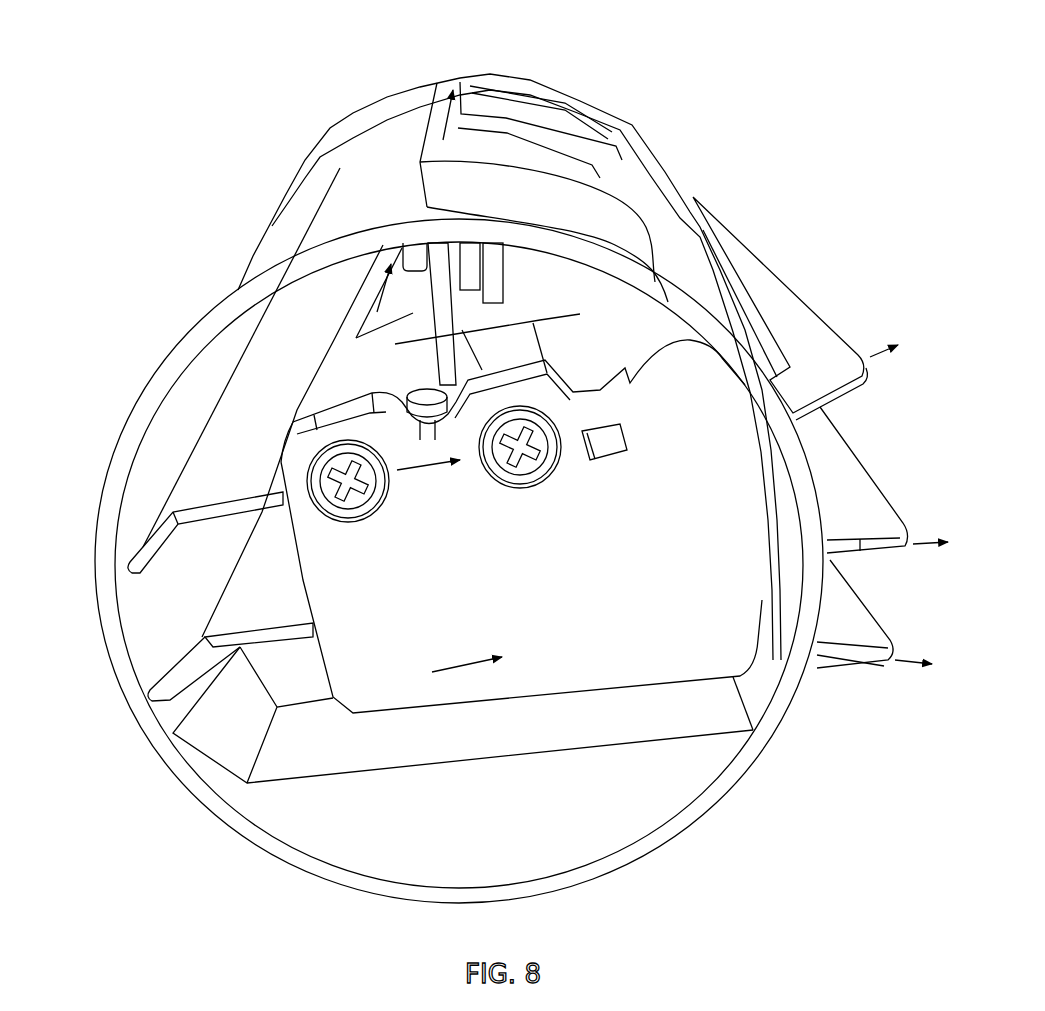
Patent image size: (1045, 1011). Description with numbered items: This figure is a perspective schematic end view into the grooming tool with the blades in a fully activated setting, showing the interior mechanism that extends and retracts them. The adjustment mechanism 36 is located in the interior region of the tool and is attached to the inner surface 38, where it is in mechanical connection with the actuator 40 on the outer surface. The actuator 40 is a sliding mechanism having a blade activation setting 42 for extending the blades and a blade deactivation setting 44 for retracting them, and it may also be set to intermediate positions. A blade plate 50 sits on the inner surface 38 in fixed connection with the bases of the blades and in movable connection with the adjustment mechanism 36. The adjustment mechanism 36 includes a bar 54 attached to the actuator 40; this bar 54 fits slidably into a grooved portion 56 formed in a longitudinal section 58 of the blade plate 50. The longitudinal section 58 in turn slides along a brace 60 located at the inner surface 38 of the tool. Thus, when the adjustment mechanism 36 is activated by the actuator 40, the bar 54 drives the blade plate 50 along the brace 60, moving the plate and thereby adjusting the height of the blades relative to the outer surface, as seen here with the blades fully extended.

The adjustment mechanism 36 is at (312, 312).
The inner surface 38 is at (160, 605).
The actuator 40 is at (684, 178).
The blade activation setting 42 is at (554, 123).
The blade deactivation setting 44 is at (608, 165).
The blade plate 50 is at (557, 574).
The bar 54 is at (415, 345).
The grooved portion 56 is at (405, 343).
The longitudinal section 58 is at (330, 385).
The brace 60 is at (246, 479).